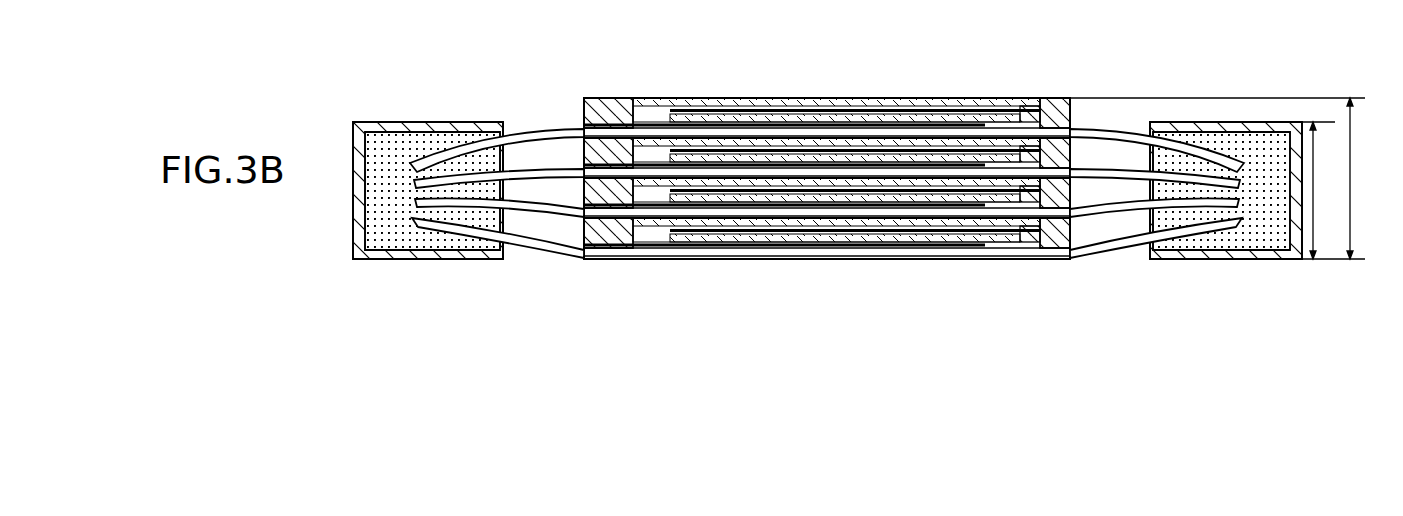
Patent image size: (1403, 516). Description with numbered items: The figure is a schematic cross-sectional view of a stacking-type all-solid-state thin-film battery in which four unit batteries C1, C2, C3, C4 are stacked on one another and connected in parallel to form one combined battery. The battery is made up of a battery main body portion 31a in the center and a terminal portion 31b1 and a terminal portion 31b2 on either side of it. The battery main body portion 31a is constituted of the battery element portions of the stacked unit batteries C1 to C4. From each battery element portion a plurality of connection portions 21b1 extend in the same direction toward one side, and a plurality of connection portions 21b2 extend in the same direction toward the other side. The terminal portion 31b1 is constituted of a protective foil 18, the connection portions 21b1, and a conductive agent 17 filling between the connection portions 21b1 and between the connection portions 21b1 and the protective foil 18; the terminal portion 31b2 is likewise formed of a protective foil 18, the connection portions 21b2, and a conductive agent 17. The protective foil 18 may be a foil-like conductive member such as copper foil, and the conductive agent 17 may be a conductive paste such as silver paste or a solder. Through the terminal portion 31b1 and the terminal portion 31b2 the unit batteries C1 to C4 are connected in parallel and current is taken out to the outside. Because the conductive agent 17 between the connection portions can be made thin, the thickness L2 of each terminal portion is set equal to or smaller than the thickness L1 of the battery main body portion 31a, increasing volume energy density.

The battery main body portion 31a is at (837, 95).
The terminal portion 31b1 is at (347, 125).
The terminal portion 31b2 is at (1276, 116).
The protective foil 18 is at (378, 125).
The conductive agent 17 is at (394, 240).
The connection portions 21b1 is at (419, 170).
The connection portions 21b2 is at (1086, 170).
The unit battery C1 is at (574, 242).
The unit battery C2 is at (575, 202).
The unit battery C3 is at (573, 143).
The unit battery C4 is at (574, 101).
The thickness of the battery main body portion L1 is at (1225, 178).
The thickness of the terminal portion L2 is at (1321, 190).